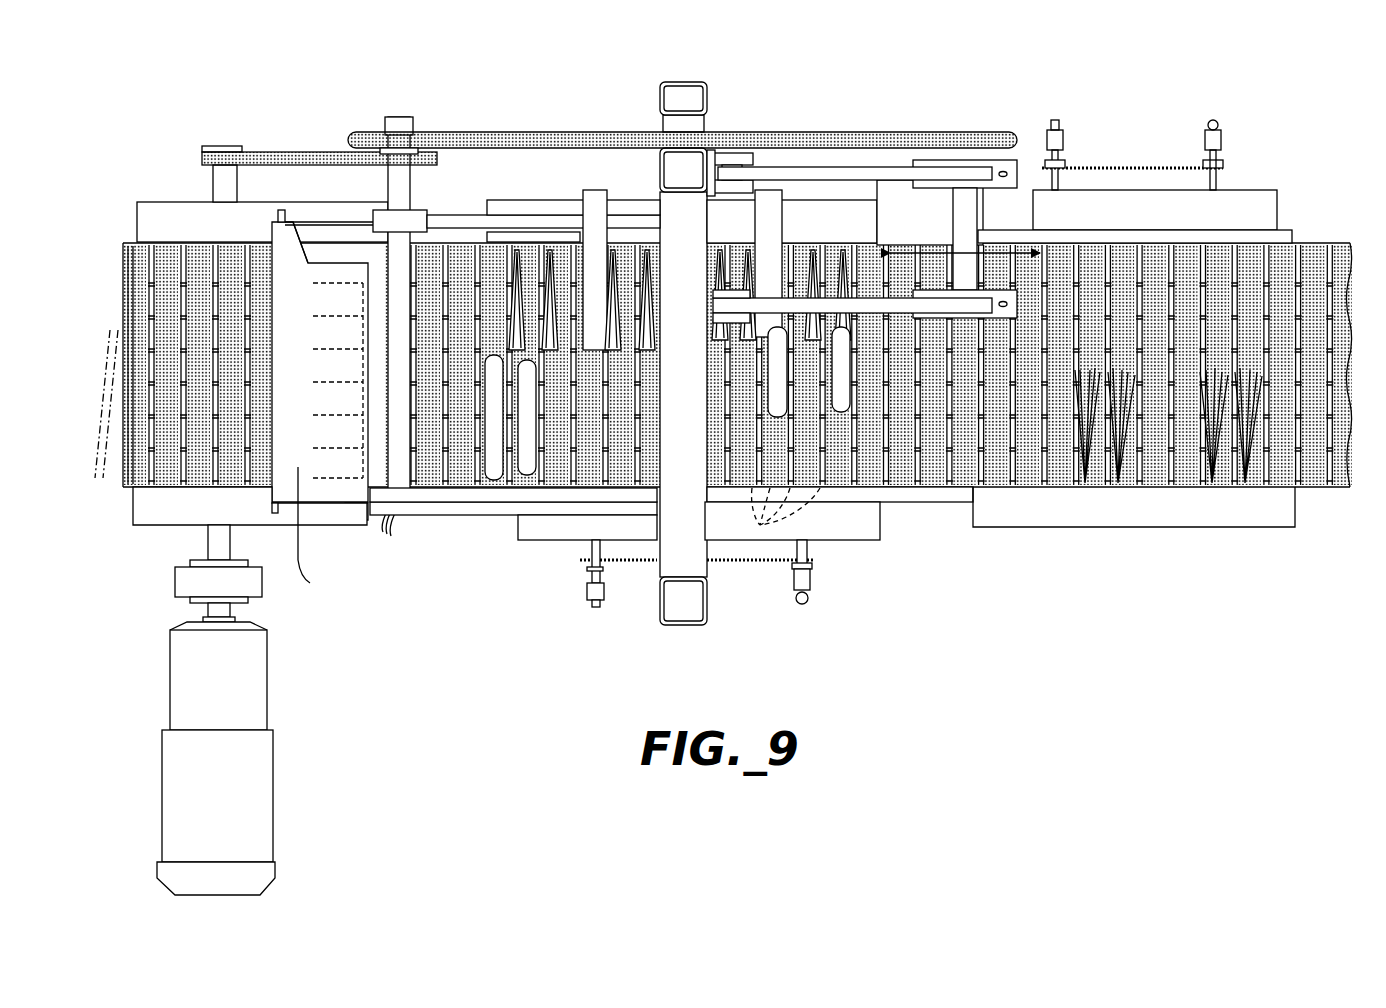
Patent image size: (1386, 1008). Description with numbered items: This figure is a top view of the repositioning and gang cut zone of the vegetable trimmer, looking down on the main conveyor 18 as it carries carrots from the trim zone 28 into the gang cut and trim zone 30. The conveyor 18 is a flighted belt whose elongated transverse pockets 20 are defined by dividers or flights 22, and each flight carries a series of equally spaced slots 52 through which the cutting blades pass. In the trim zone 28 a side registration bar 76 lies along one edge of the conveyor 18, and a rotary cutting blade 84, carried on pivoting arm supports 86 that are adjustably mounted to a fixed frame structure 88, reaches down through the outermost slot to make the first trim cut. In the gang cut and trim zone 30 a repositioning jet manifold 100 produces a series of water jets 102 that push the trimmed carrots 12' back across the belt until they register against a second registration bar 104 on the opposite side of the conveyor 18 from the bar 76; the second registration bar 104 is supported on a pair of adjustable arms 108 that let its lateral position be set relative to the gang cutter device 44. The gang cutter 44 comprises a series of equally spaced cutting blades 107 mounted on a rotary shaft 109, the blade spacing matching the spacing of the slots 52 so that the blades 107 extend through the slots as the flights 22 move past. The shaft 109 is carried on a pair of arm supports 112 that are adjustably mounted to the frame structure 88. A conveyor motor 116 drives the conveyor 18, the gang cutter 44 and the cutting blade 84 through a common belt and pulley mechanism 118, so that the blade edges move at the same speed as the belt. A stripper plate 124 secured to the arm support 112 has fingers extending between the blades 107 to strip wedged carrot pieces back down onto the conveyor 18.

The carrot (trimmed) 12' is at (771, 515).
The main conveyor 18 is at (937, 465).
The transverse pockets 20 is at (615, 474).
The flights 22 is at (121, 470).
The trim zone 28 is at (1141, 112).
The gang cut and trim zone 30 is at (398, 84).
The gang cutter device 44 is at (336, 278).
The slots 52 is at (126, 322).
The side registration bar 76 is at (1290, 232).
The rotary cutting blade 84 is at (937, 250).
The arm supports 86 is at (936, 168).
The frame structure 88 is at (709, 96).
The repositioning jet manifold 100 is at (750, 198).
The water jets 102 is at (647, 250).
The second registration bar 104 is at (489, 508).
The cutting blades 107 is at (335, 303).
The adjustable arms 108 is at (605, 585).
The rotary shaft 109 is at (412, 178).
The arm supports 112 is at (432, 220).
The conveyor motor 116 is at (268, 716).
The belt and pulley mechanism 118 is at (262, 152).
The stripper plate 124 is at (250, 535).